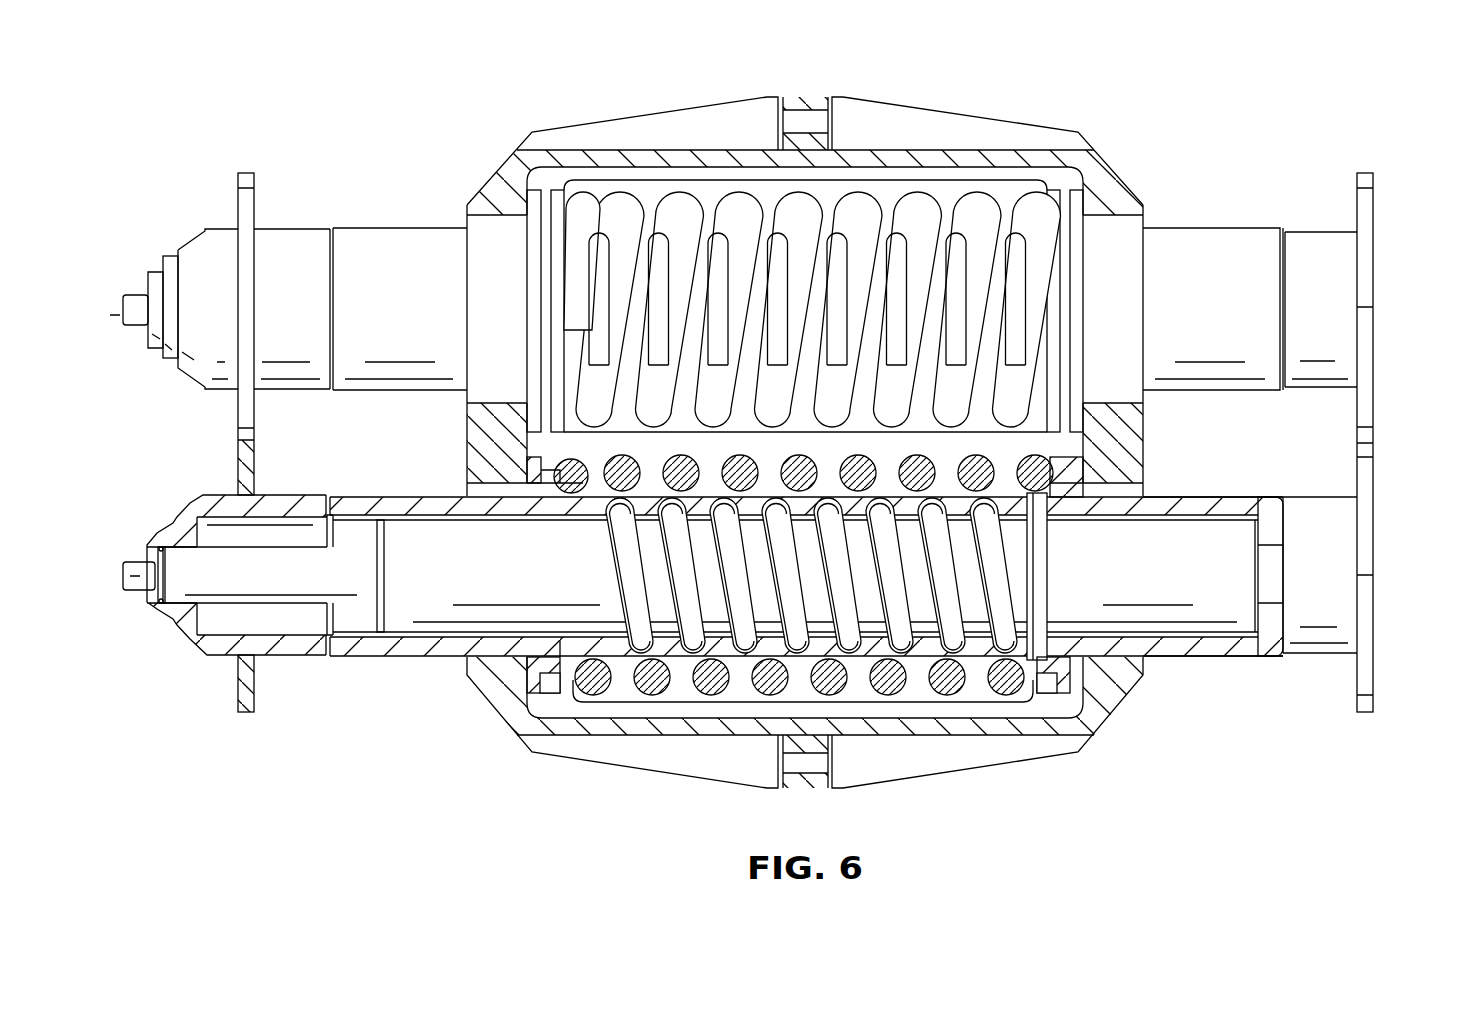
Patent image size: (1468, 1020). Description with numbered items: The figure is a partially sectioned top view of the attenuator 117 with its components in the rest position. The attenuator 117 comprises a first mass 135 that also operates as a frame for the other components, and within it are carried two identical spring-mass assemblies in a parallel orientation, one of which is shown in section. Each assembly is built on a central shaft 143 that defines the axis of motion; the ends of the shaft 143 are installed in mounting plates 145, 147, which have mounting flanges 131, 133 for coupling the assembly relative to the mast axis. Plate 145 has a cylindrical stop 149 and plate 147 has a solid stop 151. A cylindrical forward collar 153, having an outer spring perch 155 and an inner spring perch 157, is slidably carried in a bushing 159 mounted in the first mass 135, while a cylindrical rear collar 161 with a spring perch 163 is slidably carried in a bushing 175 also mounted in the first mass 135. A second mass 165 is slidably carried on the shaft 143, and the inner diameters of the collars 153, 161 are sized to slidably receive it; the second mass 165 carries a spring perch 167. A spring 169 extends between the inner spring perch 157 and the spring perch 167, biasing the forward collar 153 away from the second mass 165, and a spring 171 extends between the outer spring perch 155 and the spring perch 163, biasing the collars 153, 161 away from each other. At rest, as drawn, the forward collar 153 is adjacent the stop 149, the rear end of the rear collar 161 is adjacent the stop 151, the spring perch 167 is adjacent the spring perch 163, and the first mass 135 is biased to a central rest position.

The attenuator 117 is at (406, 128).
The mounting flange 131 is at (237, 686).
The mounting flange 133 is at (1373, 677).
The first mass 135 is at (870, 788).
The central shaft 143 is at (302, 558).
The mounting plate 145 is at (170, 618).
The mounting plate 147 is at (1373, 522).
The cylindrical stop 149 is at (277, 656).
The solid stop 151 is at (1307, 656).
The forward collar 153 is at (420, 656).
The outer spring perch 155 is at (578, 700).
The inner spring perch 157 is at (573, 648).
The bushing 159 is at (478, 487).
The rear collar 161 is at (1240, 656).
The spring perch 163 is at (1053, 683).
The second mass 165 is at (1230, 533).
The spring perch 167 is at (1050, 577).
The spring 169 is at (603, 532).
The spring 171 is at (932, 690).
The bushing 175 is at (1140, 487).